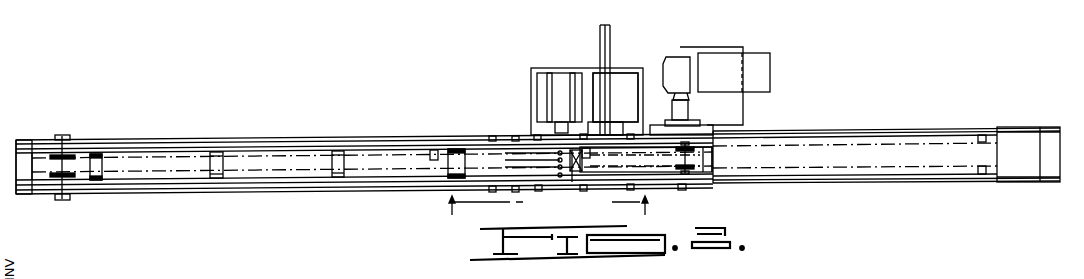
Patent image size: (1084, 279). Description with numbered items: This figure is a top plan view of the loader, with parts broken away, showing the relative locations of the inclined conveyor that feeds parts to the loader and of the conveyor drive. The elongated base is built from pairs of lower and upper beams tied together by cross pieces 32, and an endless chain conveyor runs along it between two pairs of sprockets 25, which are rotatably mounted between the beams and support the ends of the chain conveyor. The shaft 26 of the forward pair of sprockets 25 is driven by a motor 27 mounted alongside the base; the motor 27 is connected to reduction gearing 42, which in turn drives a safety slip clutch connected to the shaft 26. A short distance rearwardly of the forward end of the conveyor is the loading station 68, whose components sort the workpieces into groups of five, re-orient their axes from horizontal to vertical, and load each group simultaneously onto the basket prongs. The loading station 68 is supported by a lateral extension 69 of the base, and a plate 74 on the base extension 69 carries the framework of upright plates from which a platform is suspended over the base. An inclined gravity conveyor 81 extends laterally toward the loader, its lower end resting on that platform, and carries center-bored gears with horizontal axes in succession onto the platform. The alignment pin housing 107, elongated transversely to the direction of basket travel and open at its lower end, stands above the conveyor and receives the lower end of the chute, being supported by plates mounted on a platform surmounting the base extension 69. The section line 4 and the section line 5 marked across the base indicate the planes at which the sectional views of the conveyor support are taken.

The cross pieces 32 is at (25, 153).
The sprockets 25 is at (78, 173).
The guide member 5 is at (434, 155).
The section line 4- 4 is at (540, 208).
The alignment pin housing 107 is at (535, 130).
The lateral extension of base 69 is at (531, 80).
The inclined gravity conveyor 81 is at (600, 42).
The plate 74 is at (618, 72).
The reduction gearing 42 is at (667, 57).
The motor 27 is at (758, 62).
The shaft 26 is at (714, 155).
The loading station 68 is at (572, 184).